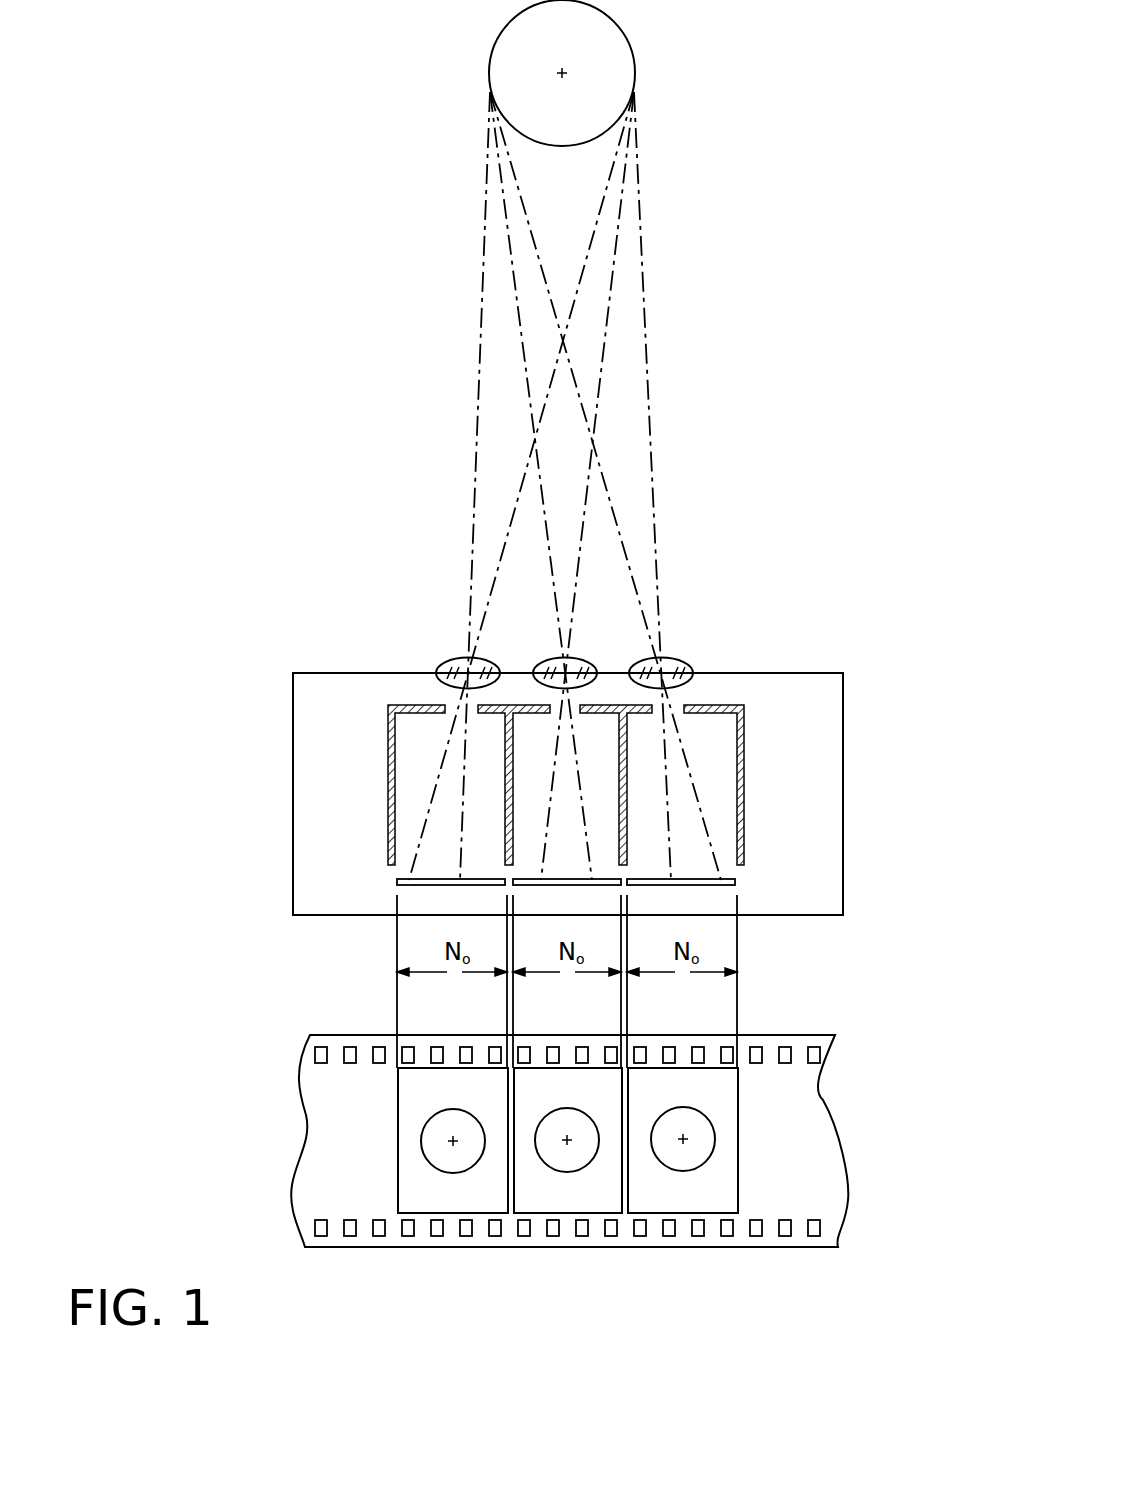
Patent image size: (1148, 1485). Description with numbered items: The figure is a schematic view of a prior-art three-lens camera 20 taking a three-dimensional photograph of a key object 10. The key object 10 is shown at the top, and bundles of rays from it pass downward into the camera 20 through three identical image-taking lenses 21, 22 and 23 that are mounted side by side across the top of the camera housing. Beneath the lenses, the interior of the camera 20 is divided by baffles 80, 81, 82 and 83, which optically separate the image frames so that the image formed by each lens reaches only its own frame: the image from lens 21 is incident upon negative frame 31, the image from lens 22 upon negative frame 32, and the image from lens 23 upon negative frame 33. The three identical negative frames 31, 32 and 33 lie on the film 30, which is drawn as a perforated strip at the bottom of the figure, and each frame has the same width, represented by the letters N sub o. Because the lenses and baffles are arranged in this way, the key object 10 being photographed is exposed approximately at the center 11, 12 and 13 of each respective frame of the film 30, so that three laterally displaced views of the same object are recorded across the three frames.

The key object 10 is at (617, 60).
The camera 20 is at (300, 687).
The image-taking lens 21 is at (455, 660).
The image-taking lens 22 is at (578, 660).
The image-taking lens 23 is at (680, 660).
The baffle 80 is at (388, 813).
The baffle 81 is at (505, 768).
The baffle 82 is at (627, 755).
The baffle 83 is at (745, 808).
The film 30 is at (320, 1108).
The negative frame 31 is at (397, 884).
The negative frame 32 is at (516, 884).
The negative frame 33 is at (735, 883).
The center of frame 11 is at (433, 1153).
The center of frame 12 is at (557, 1117).
The center of frame 13 is at (707, 1128).